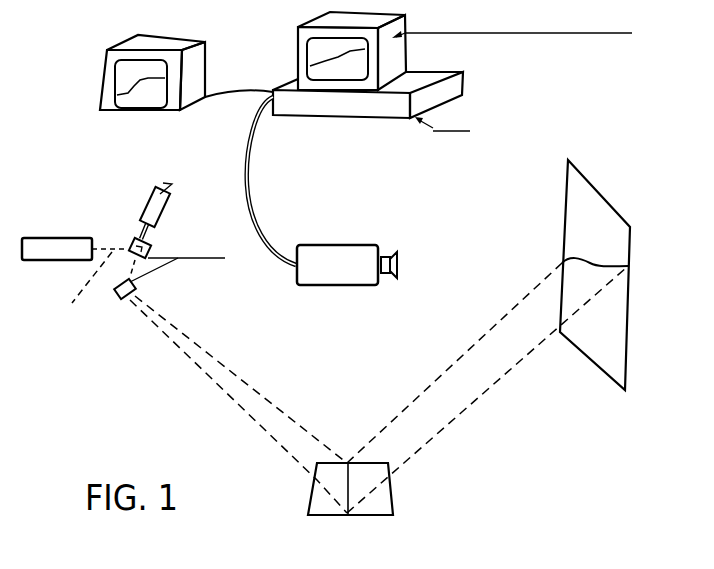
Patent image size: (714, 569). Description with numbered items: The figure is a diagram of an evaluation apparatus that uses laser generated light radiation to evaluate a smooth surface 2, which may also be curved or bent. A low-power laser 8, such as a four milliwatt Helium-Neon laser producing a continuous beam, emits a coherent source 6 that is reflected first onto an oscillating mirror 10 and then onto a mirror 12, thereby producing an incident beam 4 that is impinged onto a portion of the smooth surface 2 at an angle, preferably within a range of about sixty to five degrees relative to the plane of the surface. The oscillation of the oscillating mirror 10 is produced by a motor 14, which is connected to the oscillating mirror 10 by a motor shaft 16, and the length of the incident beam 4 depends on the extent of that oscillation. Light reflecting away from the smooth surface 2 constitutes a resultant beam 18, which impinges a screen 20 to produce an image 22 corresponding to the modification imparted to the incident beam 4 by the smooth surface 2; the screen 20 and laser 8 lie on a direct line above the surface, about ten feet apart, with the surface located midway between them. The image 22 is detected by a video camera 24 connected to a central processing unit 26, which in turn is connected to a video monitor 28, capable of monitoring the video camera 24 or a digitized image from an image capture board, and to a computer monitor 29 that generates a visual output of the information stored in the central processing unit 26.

The smooth surface 2 is at (393, 498).
The incident beam 4 is at (252, 408).
The coherent source 6 is at (100, 287).
The laser 8 is at (48, 238).
The oscillating mirror 10 is at (148, 257).
The mirror 12 is at (125, 300).
The motor 14 is at (167, 202).
The motor shaft 16 is at (143, 228).
The resultant beam 18 is at (468, 377).
The screen 20 is at (610, 325).
The image 22 is at (600, 257).
The video camera 24 is at (328, 245).
The central processing unit 26 is at (458, 86).
The video monitor 28 is at (165, 112).
The computer monitor 29 is at (300, 47).